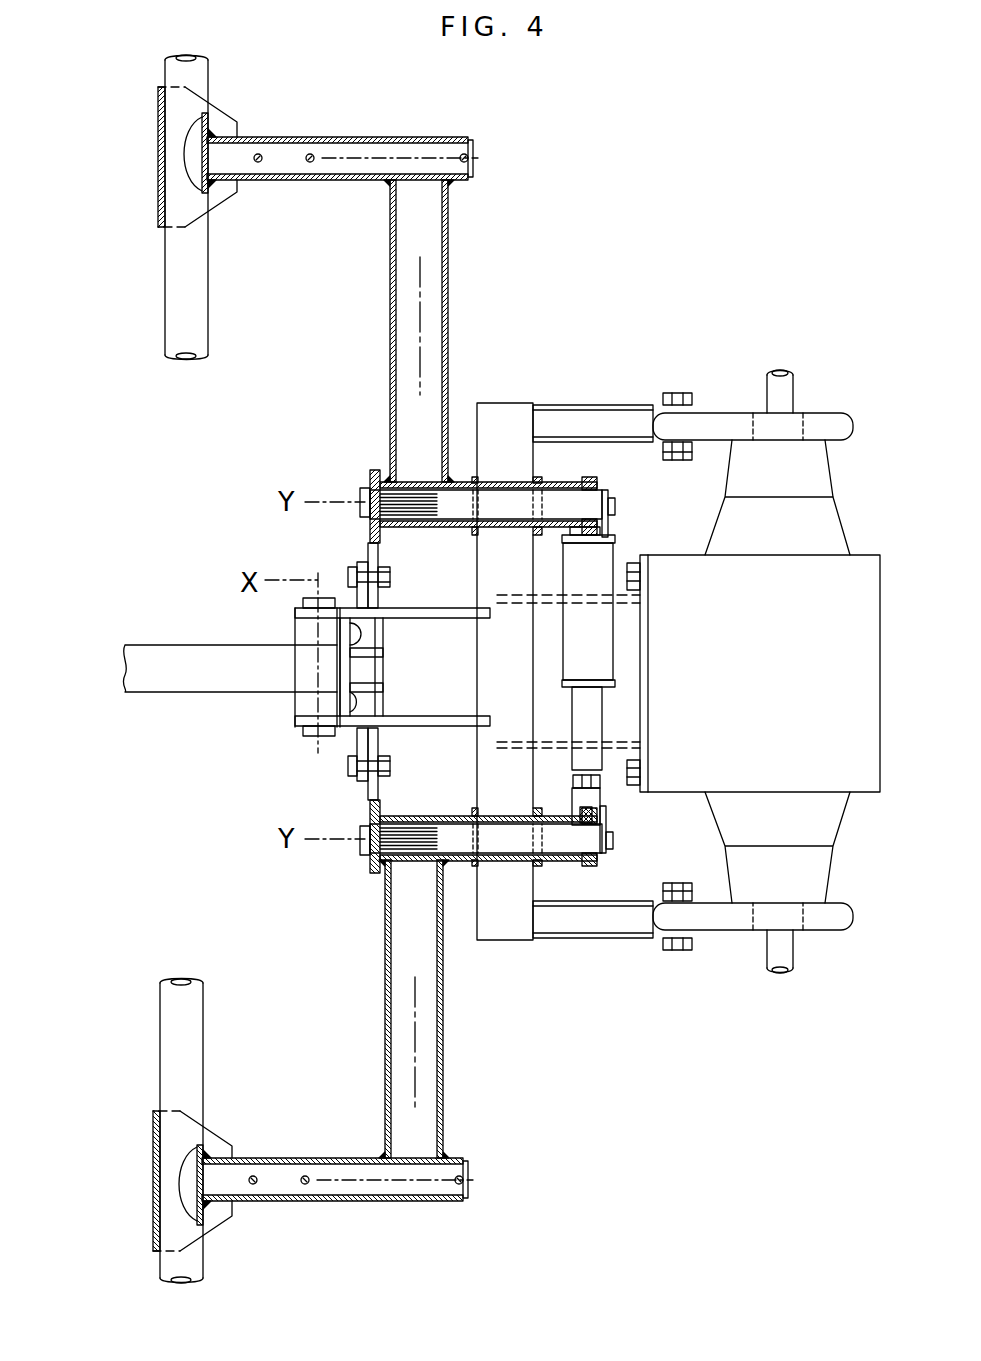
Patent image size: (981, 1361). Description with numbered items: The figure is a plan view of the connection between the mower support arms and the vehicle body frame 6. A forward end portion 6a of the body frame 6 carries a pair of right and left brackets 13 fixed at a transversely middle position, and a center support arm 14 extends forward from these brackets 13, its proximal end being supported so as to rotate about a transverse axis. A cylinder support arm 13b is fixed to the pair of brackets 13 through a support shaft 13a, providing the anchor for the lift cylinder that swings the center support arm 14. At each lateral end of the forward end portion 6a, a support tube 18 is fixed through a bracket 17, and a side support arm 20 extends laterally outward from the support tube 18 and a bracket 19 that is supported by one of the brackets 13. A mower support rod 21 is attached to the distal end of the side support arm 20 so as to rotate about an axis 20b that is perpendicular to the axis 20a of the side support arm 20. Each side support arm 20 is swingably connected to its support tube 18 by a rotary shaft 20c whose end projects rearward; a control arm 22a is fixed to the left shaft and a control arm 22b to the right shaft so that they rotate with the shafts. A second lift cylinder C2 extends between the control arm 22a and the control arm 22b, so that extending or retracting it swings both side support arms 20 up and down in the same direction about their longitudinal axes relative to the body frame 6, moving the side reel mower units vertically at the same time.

The body frame 6 is at (621, 400).
The forward end portion 6a is at (515, 412).
The brackets 13 is at (400, 620).
The support shaft 13a is at (370, 640).
The cylinder support arm 13b is at (383, 686).
The center support arm 14 is at (158, 655).
The bracket 17 is at (472, 530).
The support tube 18 is at (563, 480).
The bracket 19 is at (367, 480).
The side support arm 20 is at (448, 252).
The axis of the side support arm 20a is at (420, 292).
The axis 20b is at (480, 160).
The rotary shaft 20c is at (505, 498).
The mower support rod 21 is at (195, 322).
The control arm 22a is at (590, 869).
The control arm 22b is at (592, 482).
The second lift cylinder C2 is at (605, 665).